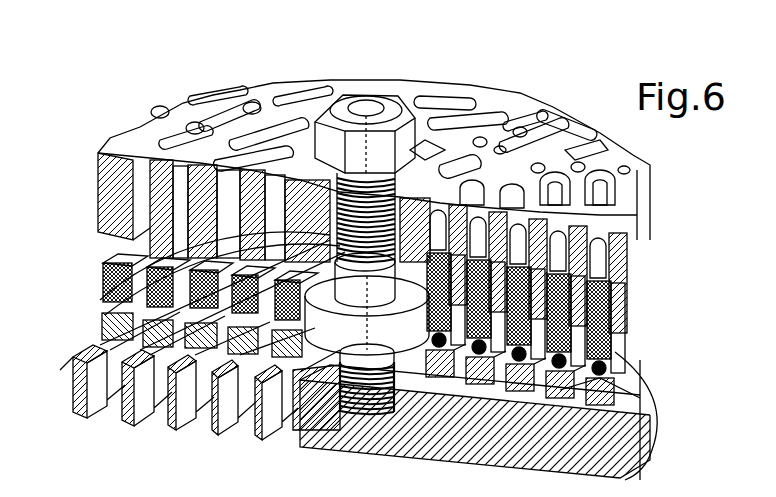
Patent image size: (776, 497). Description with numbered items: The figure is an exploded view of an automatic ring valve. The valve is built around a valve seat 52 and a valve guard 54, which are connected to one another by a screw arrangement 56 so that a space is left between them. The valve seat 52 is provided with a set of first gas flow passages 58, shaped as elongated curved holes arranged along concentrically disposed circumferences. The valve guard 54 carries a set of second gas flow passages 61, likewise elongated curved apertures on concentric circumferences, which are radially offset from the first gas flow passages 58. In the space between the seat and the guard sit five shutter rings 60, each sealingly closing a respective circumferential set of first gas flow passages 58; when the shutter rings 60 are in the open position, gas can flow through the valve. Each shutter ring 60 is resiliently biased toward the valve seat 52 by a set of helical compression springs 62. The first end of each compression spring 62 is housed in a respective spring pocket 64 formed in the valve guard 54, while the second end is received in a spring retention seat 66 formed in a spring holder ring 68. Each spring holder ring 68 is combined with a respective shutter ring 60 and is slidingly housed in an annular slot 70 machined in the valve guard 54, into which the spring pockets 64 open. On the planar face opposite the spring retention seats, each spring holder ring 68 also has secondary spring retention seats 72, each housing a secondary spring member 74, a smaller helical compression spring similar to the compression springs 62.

The valve seat 52 is at (78, 380).
The valve guard 54 is at (647, 160).
The screw arrangement 56 is at (385, 138).
The first gas flow passages 58 is at (165, 404).
The shutter rings 60 is at (102, 331).
The second gas flow passages 61 is at (182, 164).
The helical compression springs 62 is at (622, 312).
The spring pockets 64 is at (622, 213).
The spring retention seats 66 is at (158, 262).
The spring holder rings 68 is at (104, 290).
The annular slots 70 is at (620, 278).
The secondary spring retention seats 72 is at (640, 396).
The secondary spring members 74 is at (625, 350).